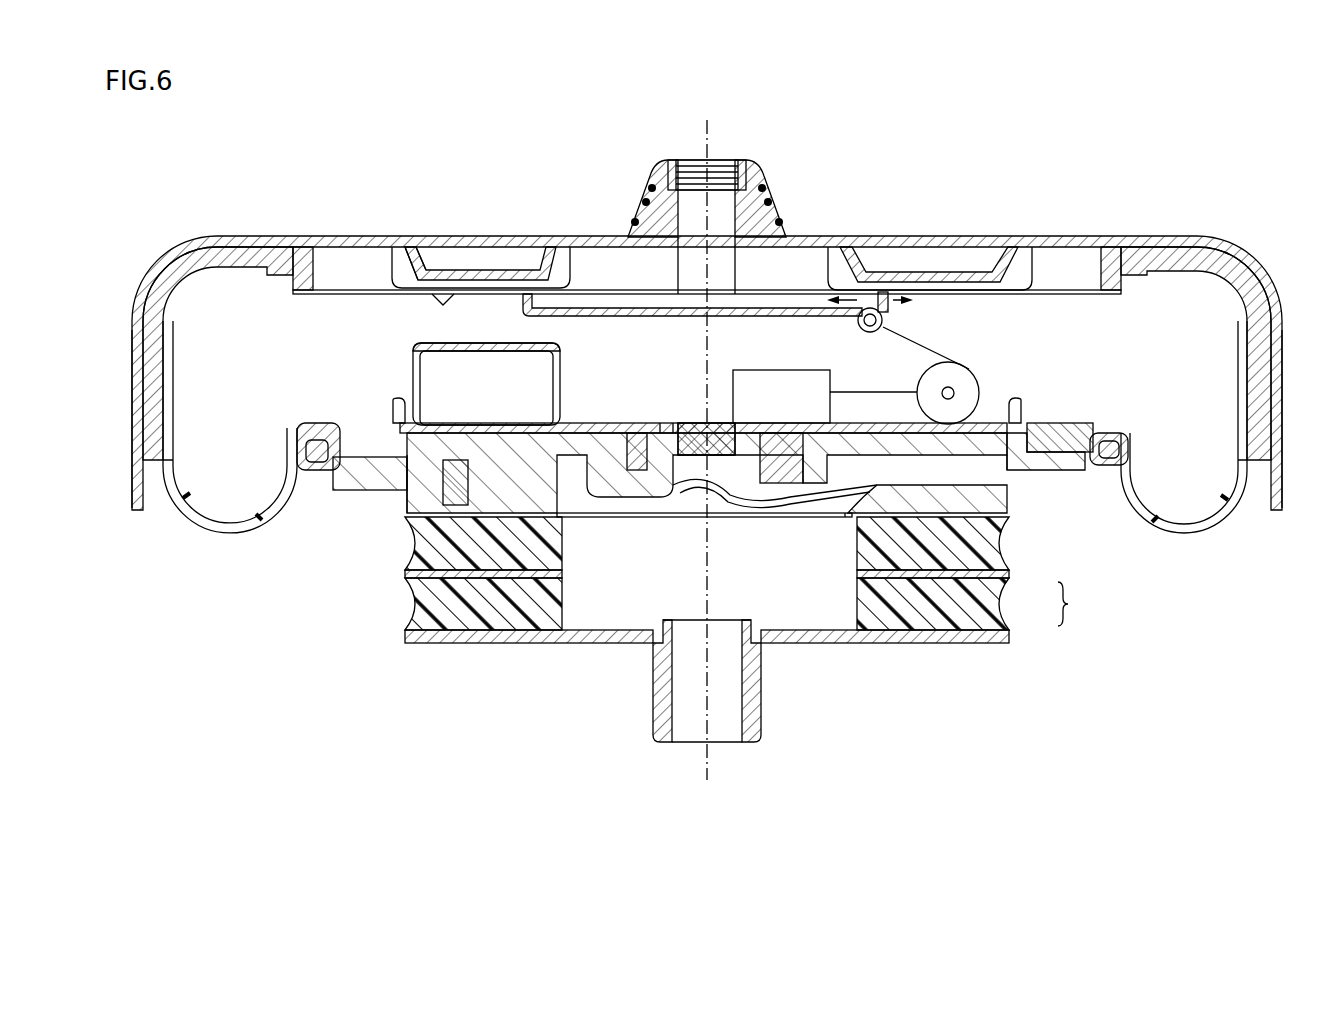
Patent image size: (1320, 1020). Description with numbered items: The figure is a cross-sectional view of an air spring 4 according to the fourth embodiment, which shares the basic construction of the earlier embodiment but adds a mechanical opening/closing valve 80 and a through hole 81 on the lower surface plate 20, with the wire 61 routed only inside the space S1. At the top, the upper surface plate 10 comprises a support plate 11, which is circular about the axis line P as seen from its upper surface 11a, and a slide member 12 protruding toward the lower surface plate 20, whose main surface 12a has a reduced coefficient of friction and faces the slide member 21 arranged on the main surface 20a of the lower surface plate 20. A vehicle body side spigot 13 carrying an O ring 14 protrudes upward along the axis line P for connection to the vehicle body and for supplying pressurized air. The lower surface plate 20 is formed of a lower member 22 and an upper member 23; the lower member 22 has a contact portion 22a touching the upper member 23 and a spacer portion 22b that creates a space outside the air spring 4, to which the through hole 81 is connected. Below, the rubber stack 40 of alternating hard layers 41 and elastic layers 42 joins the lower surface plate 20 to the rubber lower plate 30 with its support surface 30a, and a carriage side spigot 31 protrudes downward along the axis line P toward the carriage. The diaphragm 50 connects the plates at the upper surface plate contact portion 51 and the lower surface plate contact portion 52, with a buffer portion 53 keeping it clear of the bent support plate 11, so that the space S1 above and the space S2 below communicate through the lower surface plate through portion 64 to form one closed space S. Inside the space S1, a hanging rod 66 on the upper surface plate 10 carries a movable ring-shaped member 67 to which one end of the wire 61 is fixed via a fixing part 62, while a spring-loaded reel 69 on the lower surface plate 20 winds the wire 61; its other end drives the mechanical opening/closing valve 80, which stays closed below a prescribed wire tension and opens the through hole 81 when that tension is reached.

The air spring 4 is at (947, 146).
The upper surface plate 10 is at (1085, 191).
The support plate 11 is at (224, 238).
The upper surface 11a is at (300, 248).
The slide member 12 is at (468, 286).
The main surface 12a is at (430, 275).
The vehicle body side spigot 13 is at (752, 172).
The O ring 14 is at (770, 215).
The lower surface plate 20 is at (662, 423).
The main surface 20a is at (692, 423).
The slide member 21 is at (393, 400).
The lower member 22 is at (1020, 463).
The contact portion 22a is at (495, 440).
The spacer portion 22b is at (600, 497).
The upper member 23 is at (1050, 452).
The rubber lower plate 30 is at (870, 640).
The support surface 30a is at (842, 612).
The carriage side spigot 31 is at (765, 705).
The rubber stack 40 is at (1076, 604).
The hard layer 41 is at (420, 574).
The elastic layer 42 is at (432, 530).
The diaphragm 50 is at (215, 527).
The upper surface plate contact portion 51 is at (160, 322).
The lower surface plate contact portion 52 is at (335, 470).
The buffer portion 53 is at (160, 463).
The wire 61 is at (933, 340).
The fixing part 62 is at (655, 176).
The lower surface plate through portion 64 is at (722, 165).
The hanging rod 66 is at (528, 306).
The ring-shaped member 67 is at (870, 306).
The reel 69 is at (962, 385).
The mechanical opening/closing valve 80 is at (790, 370).
The through hole 81 is at (812, 430).
The axis line P is at (704, 449).
The closed space S is at (1125, 722).
The space S1 is at (247, 490).
The space S2 is at (628, 642).